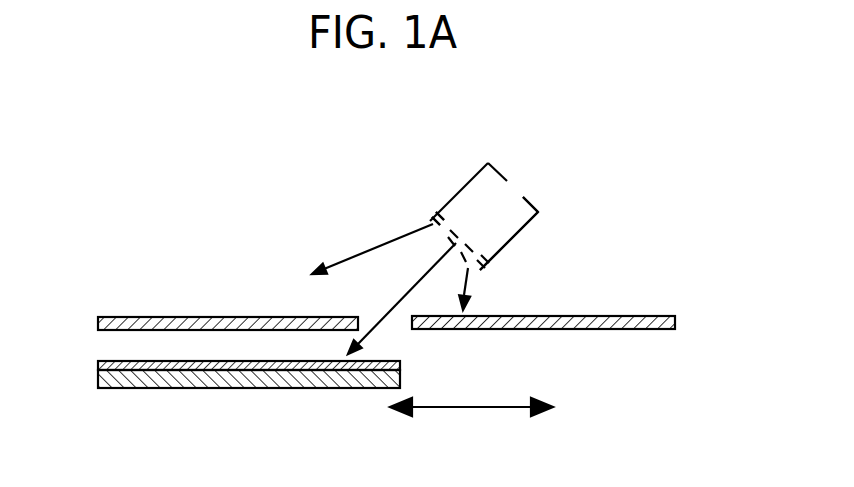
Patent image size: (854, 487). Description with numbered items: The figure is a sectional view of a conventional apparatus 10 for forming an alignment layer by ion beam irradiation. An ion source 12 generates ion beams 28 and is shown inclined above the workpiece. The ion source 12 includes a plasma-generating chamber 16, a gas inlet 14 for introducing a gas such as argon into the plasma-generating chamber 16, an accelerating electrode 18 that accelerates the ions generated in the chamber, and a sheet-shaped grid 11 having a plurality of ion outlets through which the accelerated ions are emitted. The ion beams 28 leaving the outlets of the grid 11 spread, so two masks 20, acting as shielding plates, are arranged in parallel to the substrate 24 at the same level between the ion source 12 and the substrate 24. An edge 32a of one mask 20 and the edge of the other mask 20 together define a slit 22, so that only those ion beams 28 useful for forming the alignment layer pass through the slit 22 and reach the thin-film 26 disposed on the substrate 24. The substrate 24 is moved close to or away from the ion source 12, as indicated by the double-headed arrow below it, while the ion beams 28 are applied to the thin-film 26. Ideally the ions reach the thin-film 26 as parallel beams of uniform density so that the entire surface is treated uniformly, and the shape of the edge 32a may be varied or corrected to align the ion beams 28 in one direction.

The alignment layer-forming apparatus 10 is at (296, 201).
The sheet-shaped grid 11 is at (420, 227).
The ion source 12 is at (455, 181).
The gas inlet 14 is at (526, 181).
The plasma-generating chamber 16 is at (512, 220).
The accelerating electrode 18 is at (483, 250).
The mask 20 is at (157, 317).
The slit 22 is at (355, 304).
The substrate 24 is at (180, 388).
The thin-film 26 is at (137, 361).
The ion beams 28 is at (381, 322).
The edge of the mask 32a is at (381, 322).